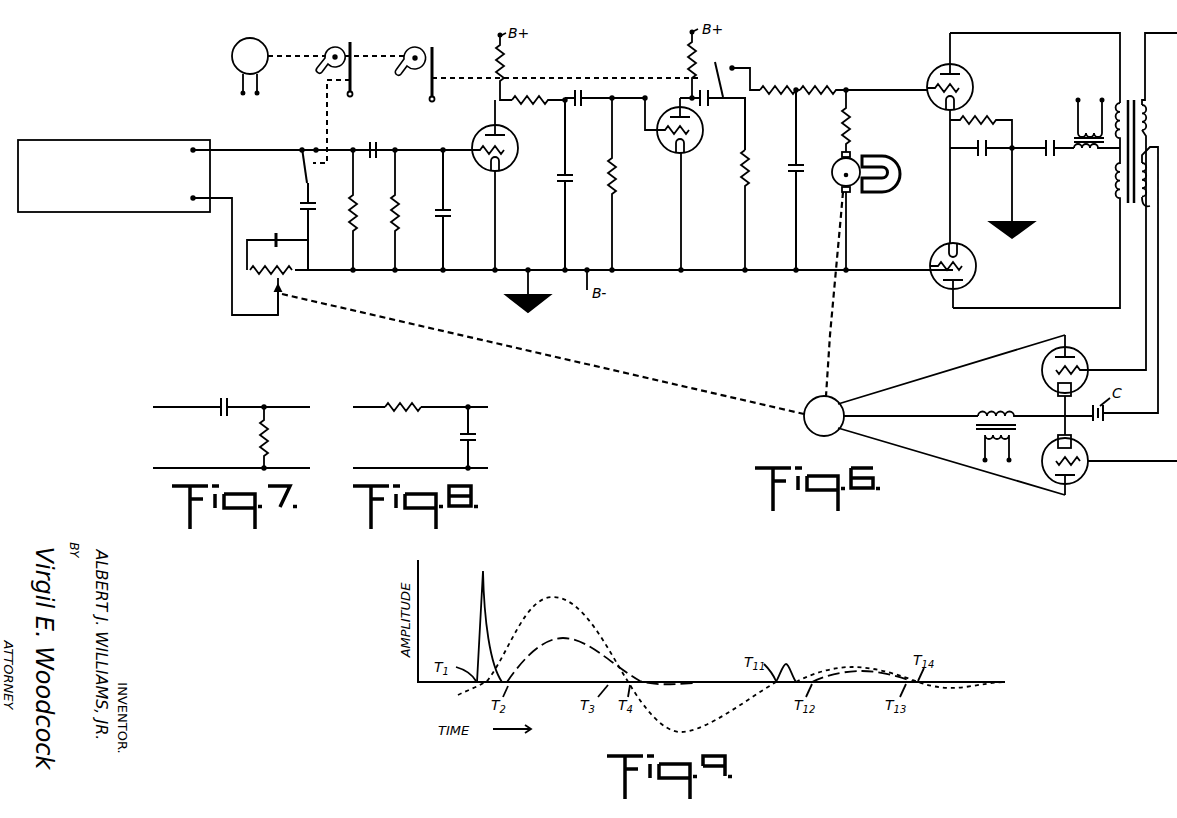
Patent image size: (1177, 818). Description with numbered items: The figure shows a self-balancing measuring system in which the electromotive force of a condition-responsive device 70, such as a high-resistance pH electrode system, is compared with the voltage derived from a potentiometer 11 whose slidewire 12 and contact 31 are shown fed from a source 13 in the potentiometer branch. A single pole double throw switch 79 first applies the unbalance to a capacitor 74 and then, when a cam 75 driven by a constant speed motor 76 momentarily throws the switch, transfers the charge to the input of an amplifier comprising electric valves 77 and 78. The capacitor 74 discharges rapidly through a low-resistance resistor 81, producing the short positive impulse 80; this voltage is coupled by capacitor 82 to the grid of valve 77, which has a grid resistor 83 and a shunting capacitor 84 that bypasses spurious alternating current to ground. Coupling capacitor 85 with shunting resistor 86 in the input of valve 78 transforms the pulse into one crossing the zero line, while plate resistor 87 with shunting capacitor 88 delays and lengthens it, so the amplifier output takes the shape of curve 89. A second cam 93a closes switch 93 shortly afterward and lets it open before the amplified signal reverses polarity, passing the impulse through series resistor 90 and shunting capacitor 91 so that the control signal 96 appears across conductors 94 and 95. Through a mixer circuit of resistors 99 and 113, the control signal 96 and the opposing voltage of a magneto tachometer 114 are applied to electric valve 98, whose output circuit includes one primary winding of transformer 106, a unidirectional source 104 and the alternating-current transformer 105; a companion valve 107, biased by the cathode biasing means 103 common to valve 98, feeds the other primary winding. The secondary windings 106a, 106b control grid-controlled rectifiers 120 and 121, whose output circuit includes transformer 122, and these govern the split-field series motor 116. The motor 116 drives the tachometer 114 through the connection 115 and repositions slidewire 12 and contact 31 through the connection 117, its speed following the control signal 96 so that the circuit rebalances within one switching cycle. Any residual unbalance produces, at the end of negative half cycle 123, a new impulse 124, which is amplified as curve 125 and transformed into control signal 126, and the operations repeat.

In FIG. 6, the condition-responsive device 70 is at (148, 212).
In FIG. 6, the constant speed motor 76 is at (232, 56).
In FIG. 6, the cam 75 is at (330, 47).
In FIG. 6, the cam 93a is at (422, 47).
In FIG. 6, the switch 79 is at (298, 160).
In FIG. 6, the capacitor 74 is at (298, 206).
In FIG. 6, the battery / conductor 13 is at (274, 238).
In FIG. 6, the potentiometer 11 is at (272, 264).
In FIG. 6, the slidewire 12 is at (302, 285).
In FIG. 6, the contact 31 is at (270, 286).
In FIG. 6, the coupling capacitor 82 is at (368, 142).
In FIG. 7, the coupling capacitor 82 is at (220, 398).
In FIG. 6, the resistor 81 is at (348, 218).
In FIG. 6, the grid resistor 83 is at (390, 214).
In FIG. 7, the grid resistor 83 is at (270, 438).
In FIG. 6, the shunting capacitor 84 is at (436, 212).
In FIG. 6, the plate resistor 87 is at (528, 106).
In FIG. 8, the plate resistor 87 is at (388, 400).
In FIG. 6, the electric valve 77 is at (516, 164).
In FIG. 6, the shunting capacitor 88 is at (574, 185).
In FIG. 8, the shunting capacitor 88 is at (480, 438).
In FIG. 6, the capacitor 85 is at (580, 108).
In FIG. 6, the shunting resistor 86 is at (618, 174).
In FIG. 6, the electric valve 78 is at (702, 130).
In FIG. 6, the switch 93 is at (722, 62).
In FIG. 6, the series resistor 90 is at (778, 86).
In FIG. 6, the resistor 99 is at (810, 92).
In FIG. 6, the conductor 94 is at (818, 86).
In FIG. 6, the shunting capacitor 91 is at (776, 178).
In FIG. 6, the resistor 113 is at (851, 126).
In FIG. 6, the magneto tachometer 114 is at (836, 180).
In FIG. 6, the conductor 95 is at (818, 272).
In FIG. 6, the broken line 117 is at (556, 360).
In FIG. 6, the broken line 115 is at (838, 352).
In FIG. 6, the motor 116 is at (812, 434).
In FIG. 6, the electric valve 98 is at (972, 76).
In FIG. 6, the cathode biasing means 103 is at (980, 143).
In FIG. 6, the unidirectional source 104 is at (1050, 158).
In FIG. 6, the transformer 105 is at (1068, 136).
In FIG. 6, the transformer 106 is at (1130, 100).
In FIG. 6, the secondary winding 106a is at (1146, 104).
In FIG. 6, the transformer winding 106b is at (1126, 206).
In FIG. 6, the electric valve 107 is at (976, 266).
In FIG. 6, the grid-controlled rectifier 120 is at (1042, 378).
In FIG. 6, the grid-controlled rectifier 121 is at (1090, 451).
In FIG. 6, the transformer 122 is at (1012, 410).
In FIG. 9, the impulse curve 80 is at (489, 594).
In FIG. 9, the output pulse curve 89 is at (590, 616).
In FIG. 9, the control signal curve 96 is at (551, 645).
In FIG. 9, the negative half cycle 123 is at (706, 730).
In FIG. 9, the impulse 124 is at (785, 663).
In FIG. 9, the amplified impulse 125 is at (851, 666).
In FIG. 9, the control signal 126 is at (848, 683).